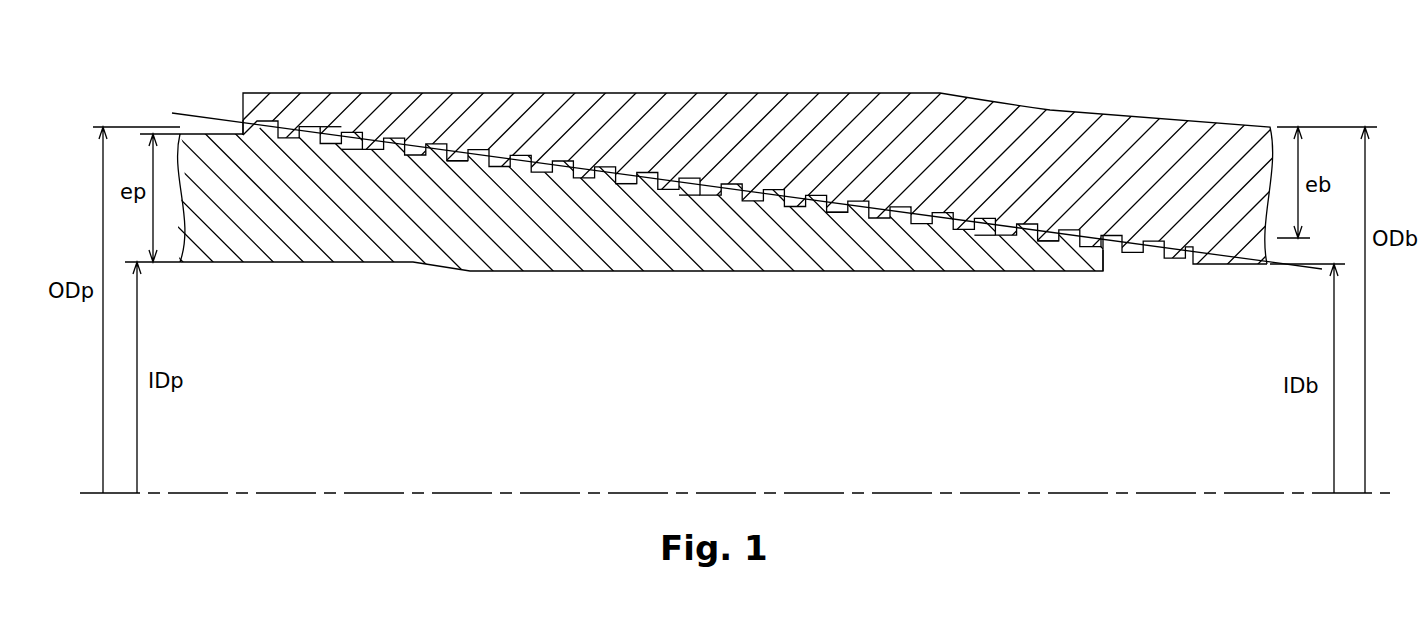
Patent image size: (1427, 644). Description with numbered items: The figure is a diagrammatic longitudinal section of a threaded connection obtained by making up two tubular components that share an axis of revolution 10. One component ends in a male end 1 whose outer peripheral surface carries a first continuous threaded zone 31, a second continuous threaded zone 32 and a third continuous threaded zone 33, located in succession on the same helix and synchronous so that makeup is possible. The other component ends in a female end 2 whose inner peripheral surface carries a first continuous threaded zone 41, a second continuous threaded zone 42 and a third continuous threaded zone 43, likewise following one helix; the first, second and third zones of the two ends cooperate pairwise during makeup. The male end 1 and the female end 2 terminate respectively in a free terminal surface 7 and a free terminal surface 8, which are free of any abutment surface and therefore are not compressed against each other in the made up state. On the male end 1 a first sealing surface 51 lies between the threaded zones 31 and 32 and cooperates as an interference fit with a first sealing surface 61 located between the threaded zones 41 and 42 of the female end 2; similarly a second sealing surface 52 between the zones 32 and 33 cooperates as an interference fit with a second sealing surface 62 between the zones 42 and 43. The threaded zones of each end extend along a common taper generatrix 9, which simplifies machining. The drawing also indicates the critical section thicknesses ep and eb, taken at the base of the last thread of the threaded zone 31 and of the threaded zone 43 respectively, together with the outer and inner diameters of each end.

The male end 1 is at (256, 200).
The female end 2 is at (957, 150).
The free terminal surface 7 is at (1105, 270).
The free terminal surface 8 is at (247, 125).
The taper generatrix 9 is at (197, 117).
The axis of revolution 10 is at (1250, 493).
The first continuous threaded zone 31 is at (352, 147).
The second continuous threaded zone 32 is at (690, 187).
The third continuous threaded zone 33 is at (983, 232).
The first continuous threaded zone 41 is at (335, 128).
The second continuous threaded zone 42 is at (630, 180).
The third continuous threaded zone 43 is at (1050, 227).
The first sealing surface 51 is at (462, 170).
The second sealing surface 52 is at (843, 212).
The first sealing surface 61 is at (457, 165).
The second sealing surface 62 is at (840, 207).